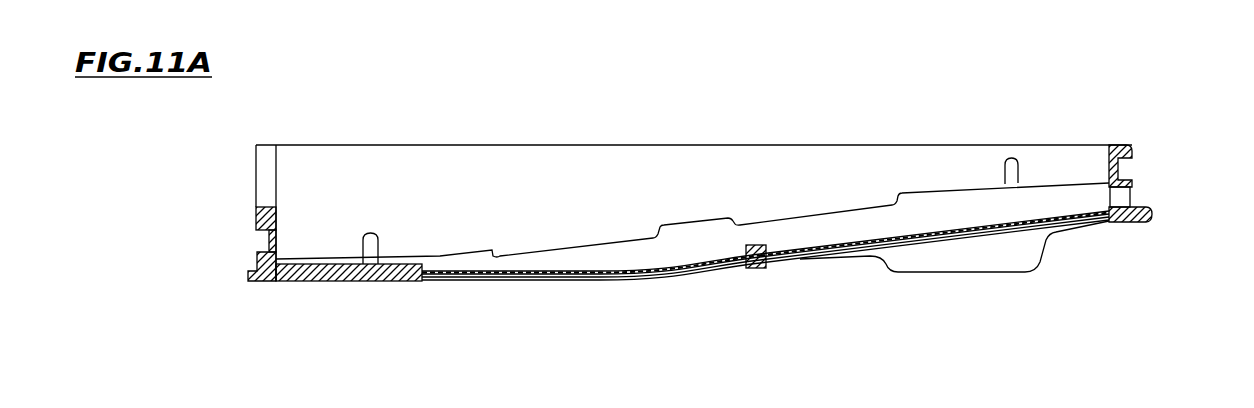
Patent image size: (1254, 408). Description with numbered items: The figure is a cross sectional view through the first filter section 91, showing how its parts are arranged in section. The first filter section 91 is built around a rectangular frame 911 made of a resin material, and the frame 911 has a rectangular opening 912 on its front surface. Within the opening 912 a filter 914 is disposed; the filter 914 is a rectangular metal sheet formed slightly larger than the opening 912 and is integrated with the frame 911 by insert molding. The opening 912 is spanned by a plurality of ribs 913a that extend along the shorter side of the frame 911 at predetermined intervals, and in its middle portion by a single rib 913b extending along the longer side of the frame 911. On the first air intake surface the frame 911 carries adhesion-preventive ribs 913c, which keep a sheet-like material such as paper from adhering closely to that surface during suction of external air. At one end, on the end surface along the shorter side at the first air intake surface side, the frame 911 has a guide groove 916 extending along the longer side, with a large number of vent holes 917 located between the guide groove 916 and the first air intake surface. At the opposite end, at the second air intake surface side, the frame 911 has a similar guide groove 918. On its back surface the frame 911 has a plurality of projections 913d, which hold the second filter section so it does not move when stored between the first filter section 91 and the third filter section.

The first filter section 91 is at (674, 128).
The frame 911 is at (333, 281).
The opening 912 is at (518, 222).
The ribs 913a is at (832, 234).
The rib 913b is at (755, 268).
The adhesion-preventive ribs 913c is at (988, 257).
The projections 913d is at (371, 232).
The filter 914 is at (592, 280).
The guide groove 916 is at (1123, 170).
The vent holes 917 is at (1130, 197).
The guide groove 918 is at (265, 241).